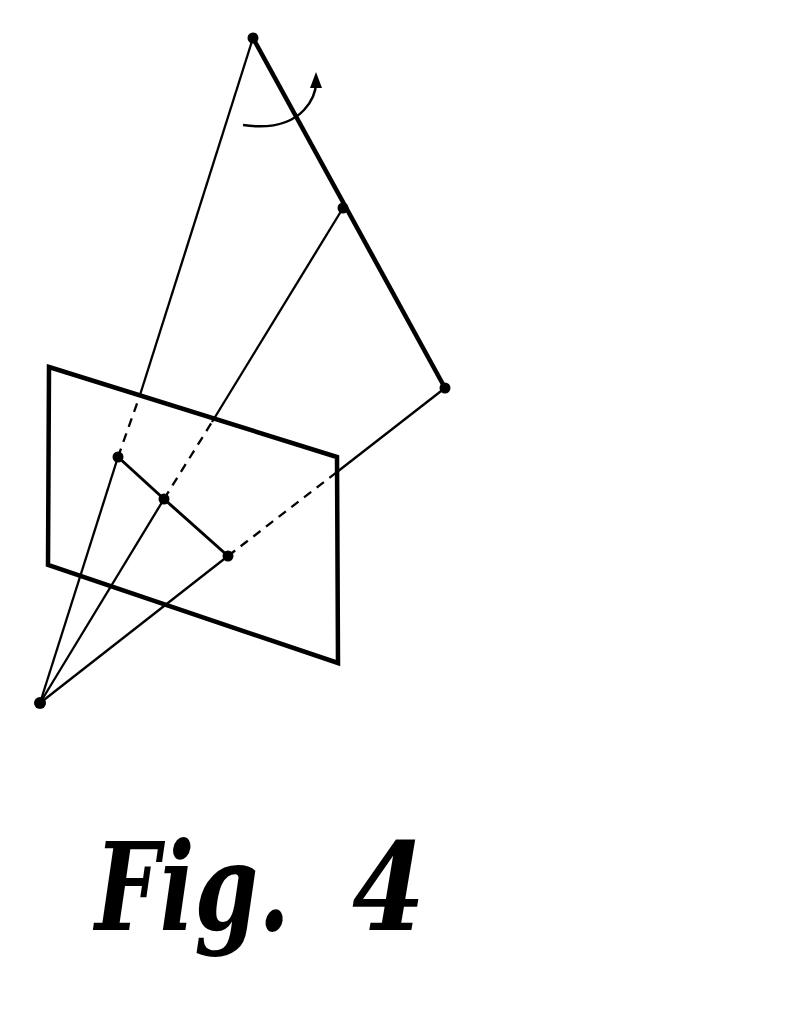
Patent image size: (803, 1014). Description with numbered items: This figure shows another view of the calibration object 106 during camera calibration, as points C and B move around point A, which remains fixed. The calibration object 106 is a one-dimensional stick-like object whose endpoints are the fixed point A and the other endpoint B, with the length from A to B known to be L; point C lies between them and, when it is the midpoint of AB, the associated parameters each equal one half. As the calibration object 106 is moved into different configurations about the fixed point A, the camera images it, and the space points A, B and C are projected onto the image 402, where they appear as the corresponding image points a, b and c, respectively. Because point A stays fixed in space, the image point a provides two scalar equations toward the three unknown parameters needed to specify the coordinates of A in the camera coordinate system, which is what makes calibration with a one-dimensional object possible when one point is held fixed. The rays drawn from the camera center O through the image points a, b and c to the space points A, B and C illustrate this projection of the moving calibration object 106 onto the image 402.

The calibration object 106 is at (423, 157).
The image 402 is at (338, 570).
The fixed point A is at (351, 37).
The other endpoint B is at (463, 388).
The midpoint C is at (362, 206).
The optical center O is at (62, 711).
The image point a is at (132, 449).
The image point b is at (243, 563).
The image point c is at (179, 494).